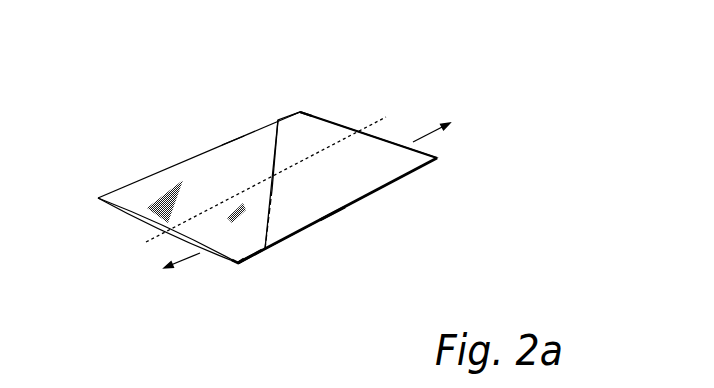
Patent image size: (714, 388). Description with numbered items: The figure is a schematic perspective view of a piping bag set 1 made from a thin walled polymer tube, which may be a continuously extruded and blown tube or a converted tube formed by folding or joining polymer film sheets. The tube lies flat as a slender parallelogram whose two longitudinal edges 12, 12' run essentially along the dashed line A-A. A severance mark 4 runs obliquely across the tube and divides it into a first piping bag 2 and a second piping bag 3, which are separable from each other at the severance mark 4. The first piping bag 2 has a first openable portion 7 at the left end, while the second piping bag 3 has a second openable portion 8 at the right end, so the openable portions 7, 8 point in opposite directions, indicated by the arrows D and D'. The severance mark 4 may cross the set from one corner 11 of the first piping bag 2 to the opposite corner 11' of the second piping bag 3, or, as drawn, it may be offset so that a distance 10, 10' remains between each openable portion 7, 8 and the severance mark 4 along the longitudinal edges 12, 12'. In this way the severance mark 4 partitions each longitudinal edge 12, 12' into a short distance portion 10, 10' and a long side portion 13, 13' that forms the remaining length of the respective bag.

The piping bag set 1 is at (268, 199).
The first piping bag 2 is at (145, 200).
The second piping bag 3 is at (353, 178).
The severance mark 4 is at (272, 194).
The first openable portion 7 is at (135, 222).
The second openable portion 8 is at (347, 115).
The distance portion 10 is at (211, 314).
The distance portion 10' is at (273, 68).
The corner of the first piping bag 11 is at (185, 305).
The corner of the second piping bag 11' is at (344, 80).
The longitudinal edge 12 is at (356, 287).
The longitudinal edge 12' is at (206, 106).
The long side portion 13 is at (366, 216).
The long side portion 13' is at (171, 155).